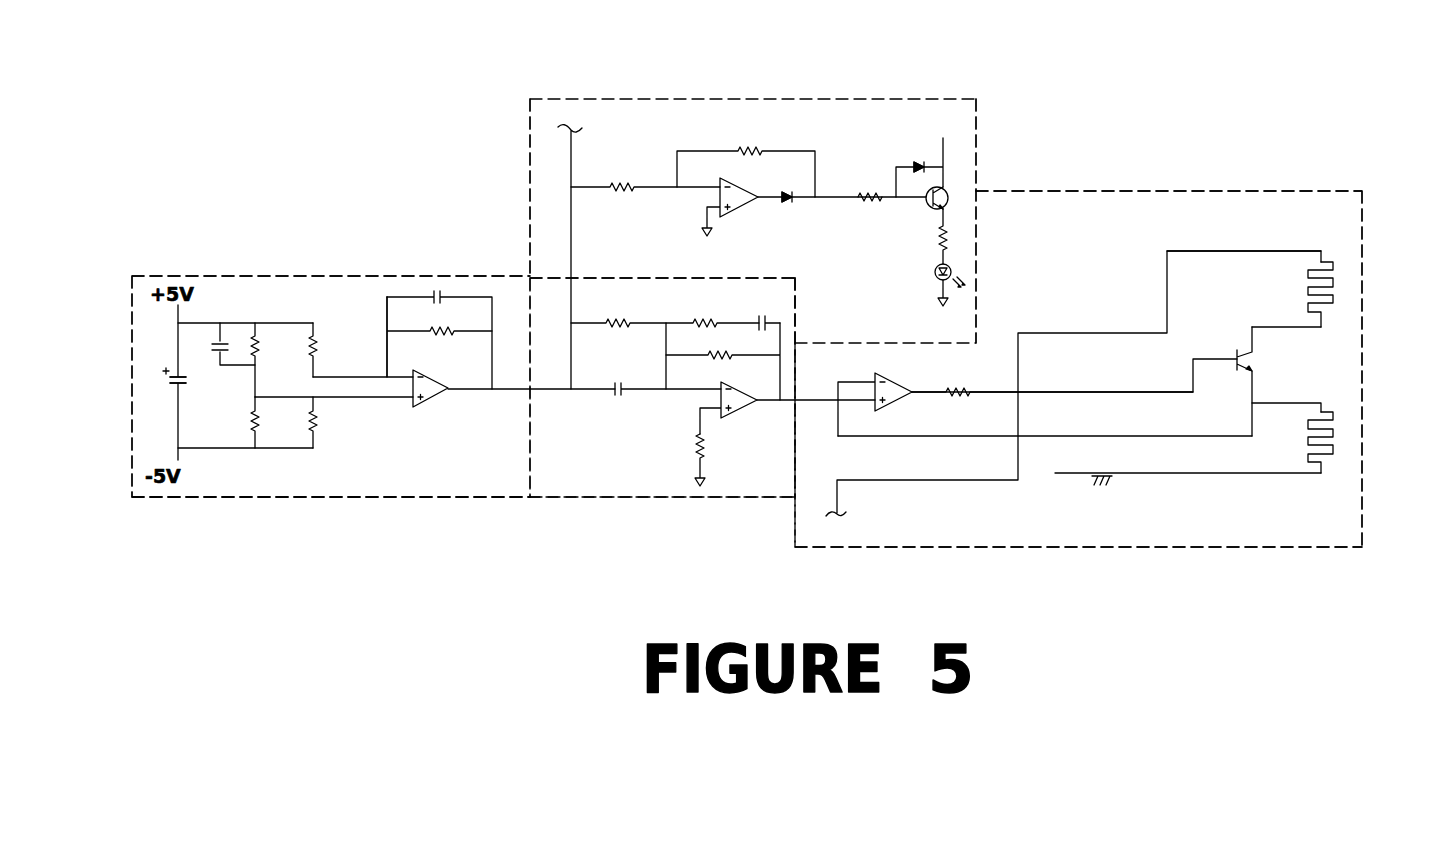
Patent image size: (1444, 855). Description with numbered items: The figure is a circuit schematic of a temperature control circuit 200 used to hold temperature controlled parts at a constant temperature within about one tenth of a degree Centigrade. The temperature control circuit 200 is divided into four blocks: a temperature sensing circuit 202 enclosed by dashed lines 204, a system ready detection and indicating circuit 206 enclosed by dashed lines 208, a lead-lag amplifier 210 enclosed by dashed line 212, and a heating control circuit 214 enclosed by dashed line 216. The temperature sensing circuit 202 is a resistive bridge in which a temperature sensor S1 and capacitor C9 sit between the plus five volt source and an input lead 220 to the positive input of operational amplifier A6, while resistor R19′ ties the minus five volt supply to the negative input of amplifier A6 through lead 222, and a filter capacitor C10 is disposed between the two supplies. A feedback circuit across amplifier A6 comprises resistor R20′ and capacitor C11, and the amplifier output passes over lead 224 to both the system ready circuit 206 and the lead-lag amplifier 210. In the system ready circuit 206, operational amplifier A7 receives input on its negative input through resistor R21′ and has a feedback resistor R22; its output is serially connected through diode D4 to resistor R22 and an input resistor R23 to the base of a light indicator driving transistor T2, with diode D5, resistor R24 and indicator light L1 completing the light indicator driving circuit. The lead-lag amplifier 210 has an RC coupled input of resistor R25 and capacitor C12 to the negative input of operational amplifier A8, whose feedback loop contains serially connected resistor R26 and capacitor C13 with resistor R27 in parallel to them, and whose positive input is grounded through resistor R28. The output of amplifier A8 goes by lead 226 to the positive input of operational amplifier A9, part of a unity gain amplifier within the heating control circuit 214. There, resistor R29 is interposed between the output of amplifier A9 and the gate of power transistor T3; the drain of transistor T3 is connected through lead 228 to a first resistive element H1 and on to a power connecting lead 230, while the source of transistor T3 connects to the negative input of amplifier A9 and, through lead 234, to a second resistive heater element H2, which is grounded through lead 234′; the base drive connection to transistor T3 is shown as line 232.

The temperature control circuit 200 is at (221, 511).
The temperature sensing circuit 202 is at (290, 272).
The dashed lines 204 is at (258, 498).
The system ready detection and indicating circuit 206 is at (614, 97).
The dashed lines 208 is at (797, 98).
The lead-lag amplifier 210 is at (526, 457).
The dashed line 212 is at (577, 498).
The heating control circuit 214 is at (1088, 190).
The dashed line 216 is at (1158, 190).
The input lead 220 is at (333, 400).
The lead 222 is at (330, 375).
The lead 224 is at (560, 389).
The lead 226 is at (812, 402).
The lead 228 is at (1285, 327).
The power connecting lead 230 is at (1137, 333).
The transistor base drive line 232 is at (1137, 392).
The lead 234 is at (1160, 436).
The lead 234′ is at (1193, 473).
The capacitor C9 is at (220, 353).
The filter capacitor C10 is at (172, 382).
The capacitor C11 is at (443, 280).
The capacitor C12 is at (618, 396).
The capacitor C13 is at (770, 318).
The temperature sensor S1 is at (258, 347).
The resistor R19′ is at (315, 424).
The resistor R20′ is at (444, 338).
The resistor R21′ is at (622, 197).
The feedback resistor R22 is at (750, 150).
The input resistor R23 is at (870, 203).
The resistor R24 is at (948, 238).
The resistor R25 is at (618, 327).
The resistor R26 is at (703, 318).
The resistor R27 is at (723, 347).
The resistor R28 is at (703, 447).
The resistor R29 is at (958, 392).
The operational amplifier A6 is at (444, 398).
The operational amplifier A7 is at (746, 210).
The operational amplifier A8 is at (742, 415).
The operational amplifier A9 is at (897, 406).
The diode D4 is at (788, 194).
The diode D5 is at (918, 166).
The light indicator driving transistor T2 is at (949, 198).
The power transistor T3 is at (1236, 359).
The indicator light L1 is at (934, 276).
The first resistive element H1 is at (1333, 291).
The second resistive heater element H2 is at (1333, 437).